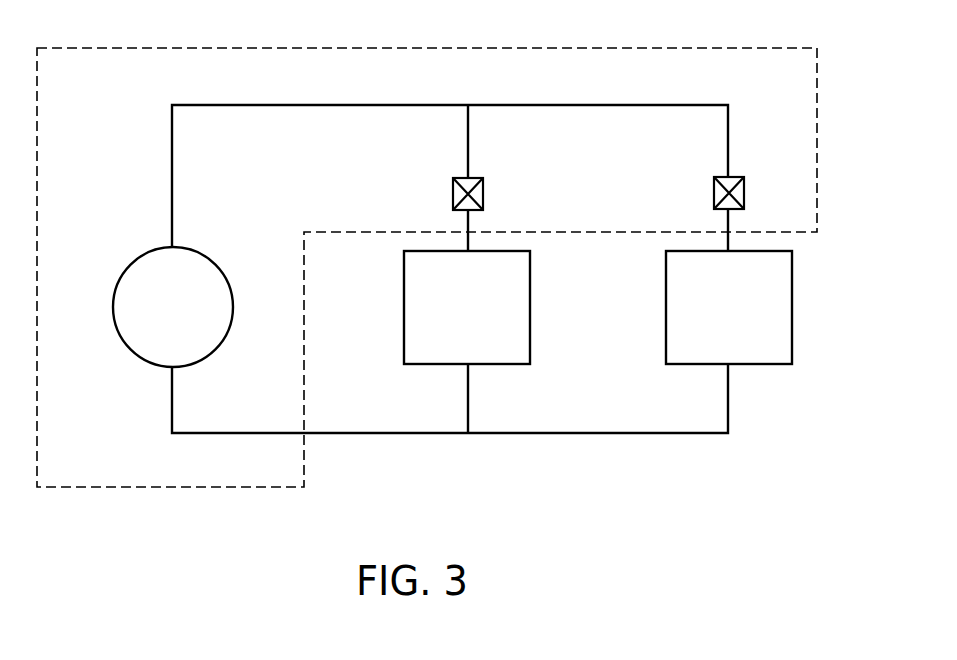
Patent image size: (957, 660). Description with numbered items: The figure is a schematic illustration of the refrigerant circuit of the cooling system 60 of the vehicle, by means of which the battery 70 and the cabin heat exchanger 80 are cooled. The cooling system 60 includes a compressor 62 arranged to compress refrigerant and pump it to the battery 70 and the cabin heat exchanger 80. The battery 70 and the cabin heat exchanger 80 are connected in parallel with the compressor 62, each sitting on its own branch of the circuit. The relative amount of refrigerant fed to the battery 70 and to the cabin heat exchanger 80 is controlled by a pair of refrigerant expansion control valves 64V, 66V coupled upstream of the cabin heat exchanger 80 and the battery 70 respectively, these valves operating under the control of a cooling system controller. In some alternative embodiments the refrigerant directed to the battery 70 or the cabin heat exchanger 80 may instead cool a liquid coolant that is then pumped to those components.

The cooling system 60 is at (818, 140).
The compressor 62 is at (189, 321).
The refrigerant expansion control valve 64V is at (452, 193).
The refrigerant expansion control valve 66V is at (713, 193).
The battery 70 is at (744, 321).
The cabin heat exchanger 80 is at (482, 321).